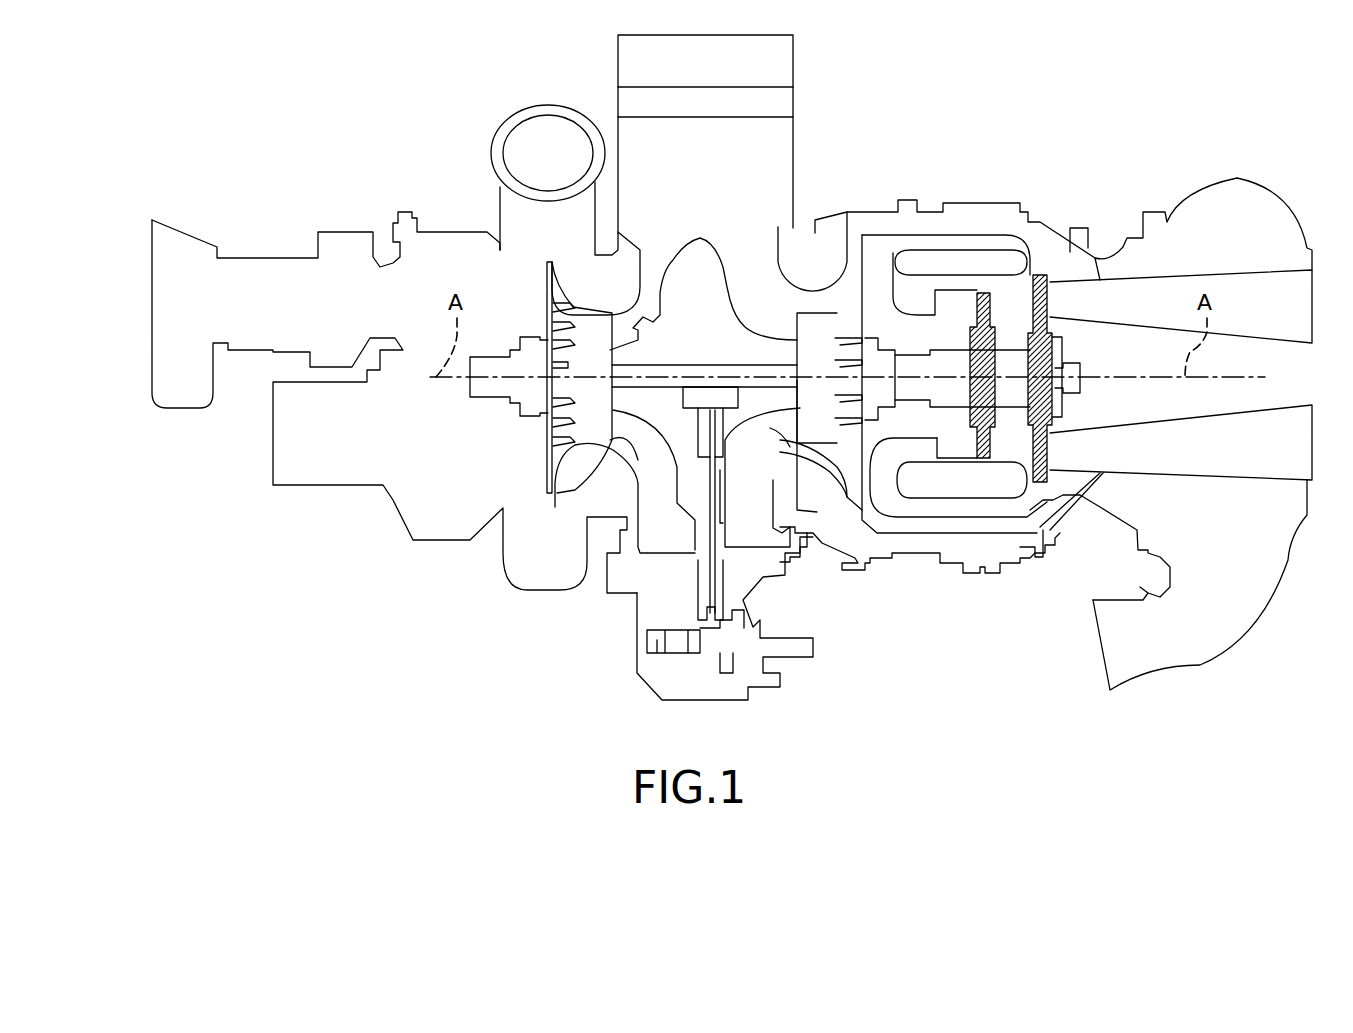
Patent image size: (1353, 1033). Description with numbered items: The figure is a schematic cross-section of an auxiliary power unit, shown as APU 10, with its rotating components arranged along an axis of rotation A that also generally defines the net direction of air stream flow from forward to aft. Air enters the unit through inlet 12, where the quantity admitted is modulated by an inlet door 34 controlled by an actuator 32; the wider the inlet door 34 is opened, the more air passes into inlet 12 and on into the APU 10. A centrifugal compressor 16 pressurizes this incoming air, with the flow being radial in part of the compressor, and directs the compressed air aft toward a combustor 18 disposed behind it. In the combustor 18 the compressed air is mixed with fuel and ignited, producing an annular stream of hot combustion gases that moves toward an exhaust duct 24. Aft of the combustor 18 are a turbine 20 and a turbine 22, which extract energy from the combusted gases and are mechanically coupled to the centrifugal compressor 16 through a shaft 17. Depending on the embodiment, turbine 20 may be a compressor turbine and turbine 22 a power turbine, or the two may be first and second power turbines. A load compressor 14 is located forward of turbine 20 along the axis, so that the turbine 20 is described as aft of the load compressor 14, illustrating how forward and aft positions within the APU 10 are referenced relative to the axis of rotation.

The APU 10 is at (1085, 92).
The inlet 12 is at (780, 227).
The load compressor 14 is at (555, 442).
The centrifugal compressor 16 is at (813, 418).
The shaft 17 is at (652, 385).
The combustor 18 is at (947, 500).
The turbine 20 is at (982, 460).
The turbine 22 is at (1035, 480).
The exhaust duct 24 is at (1253, 303).
The actuator 32 is at (782, 103).
The inlet door 34 is at (782, 54).